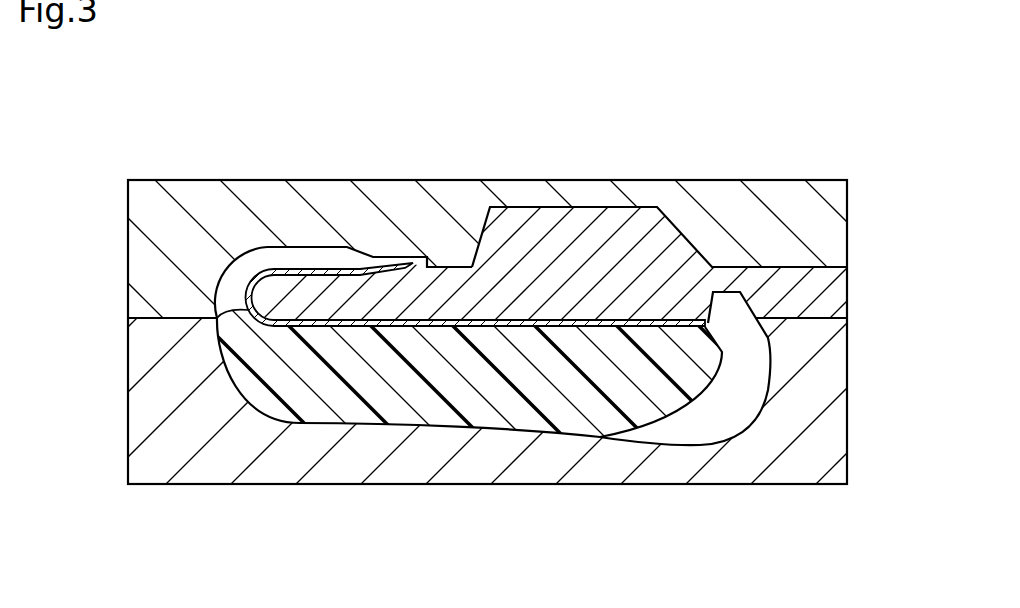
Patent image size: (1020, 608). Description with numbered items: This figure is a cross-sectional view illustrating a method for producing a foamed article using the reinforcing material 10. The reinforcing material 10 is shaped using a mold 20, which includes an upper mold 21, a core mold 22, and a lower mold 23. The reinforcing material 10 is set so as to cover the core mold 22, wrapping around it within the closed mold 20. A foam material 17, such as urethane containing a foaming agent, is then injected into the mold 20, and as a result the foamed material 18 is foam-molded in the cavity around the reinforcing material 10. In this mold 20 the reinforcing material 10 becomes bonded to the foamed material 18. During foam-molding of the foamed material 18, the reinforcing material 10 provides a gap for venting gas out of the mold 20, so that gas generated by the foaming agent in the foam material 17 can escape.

The reinforcing material 10 is at (305, 269).
The foam material 17 is at (486, 410).
The foamed material 18 is at (522, 420).
The mold 20 is at (718, 168).
The upper mold 21 is at (838, 234).
The core mold 22 is at (840, 290).
The lower mold 23 is at (840, 381).